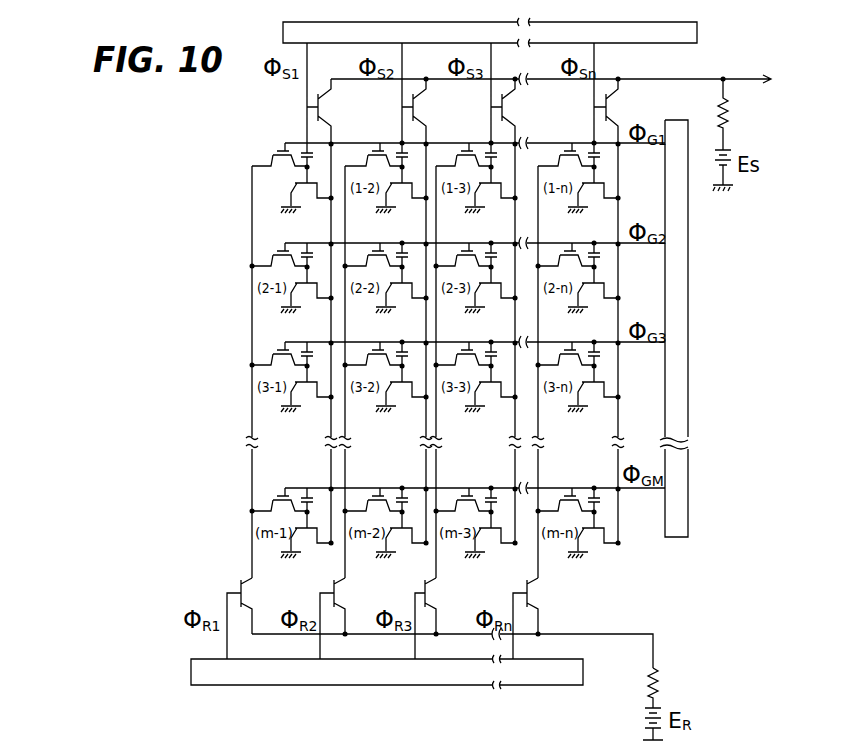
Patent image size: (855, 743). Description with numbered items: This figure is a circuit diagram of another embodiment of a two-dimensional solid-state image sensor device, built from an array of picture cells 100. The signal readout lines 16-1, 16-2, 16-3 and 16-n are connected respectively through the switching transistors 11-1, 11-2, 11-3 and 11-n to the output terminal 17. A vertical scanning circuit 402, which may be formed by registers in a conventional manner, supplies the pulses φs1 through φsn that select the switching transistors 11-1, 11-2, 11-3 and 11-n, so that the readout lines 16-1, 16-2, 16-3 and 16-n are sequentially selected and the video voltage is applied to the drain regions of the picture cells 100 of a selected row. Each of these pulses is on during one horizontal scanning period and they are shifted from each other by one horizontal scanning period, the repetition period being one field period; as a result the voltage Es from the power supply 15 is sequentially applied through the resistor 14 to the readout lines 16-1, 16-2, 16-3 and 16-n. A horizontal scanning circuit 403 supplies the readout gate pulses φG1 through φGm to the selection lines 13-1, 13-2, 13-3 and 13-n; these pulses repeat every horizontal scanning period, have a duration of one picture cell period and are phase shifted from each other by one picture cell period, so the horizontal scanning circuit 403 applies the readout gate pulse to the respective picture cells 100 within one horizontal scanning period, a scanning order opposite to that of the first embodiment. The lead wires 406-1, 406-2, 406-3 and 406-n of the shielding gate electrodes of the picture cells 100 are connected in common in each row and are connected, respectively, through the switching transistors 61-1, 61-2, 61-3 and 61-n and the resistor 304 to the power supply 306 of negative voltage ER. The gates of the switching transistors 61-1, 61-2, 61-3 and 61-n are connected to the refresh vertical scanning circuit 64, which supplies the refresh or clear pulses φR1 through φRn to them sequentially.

The vertical scanning circuit 402 is at (698, 36).
The output terminal 17 is at (761, 80).
The resistor 14 is at (730, 124).
The power supply 15 is at (737, 182).
The switching transistor 11-1 is at (337, 93).
The switching transistor 11-2 is at (431, 93).
The switching transistor 11-3 is at (523, 93).
The switching transistor 11-n is at (628, 93).
The signal readout line 16-1 is at (332, 127).
The signal readout line 16-2 is at (427, 127).
The signal readout line 16-3 is at (516, 127).
The signal readout line 16-n is at (620, 121).
The selection line 13-1 is at (522, 147).
The selection line 13-2 is at (519, 243).
The selection line 13-3 is at (519, 342).
The selection line 13-n is at (521, 494).
The picture cell 100 is at (271, 170).
The horizontal scanning circuit 403 is at (688, 397).
The lead wire 406-1 is at (253, 468).
The lead wire 406-2 is at (346, 468).
The lead wire 406-3 is at (437, 468).
The lead wire 406-n is at (540, 468).
The switching transistor 61-1 is at (259, 618).
The switching transistor 61-2 is at (354, 618).
The switching transistor 61-3 is at (449, 618).
The switching transistor 61-n is at (549, 618).
The refresh vertical scanning circuit 64 is at (421, 686).
The resistor 304 is at (651, 686).
The power supply 306 is at (644, 714).